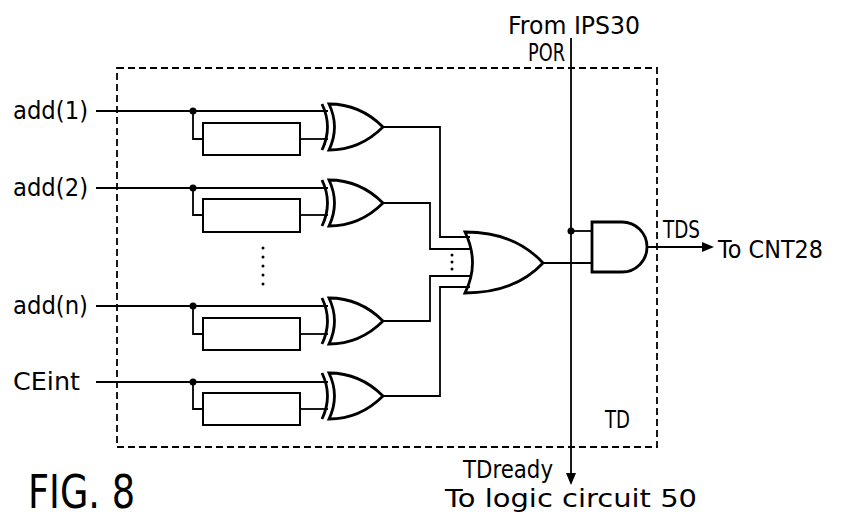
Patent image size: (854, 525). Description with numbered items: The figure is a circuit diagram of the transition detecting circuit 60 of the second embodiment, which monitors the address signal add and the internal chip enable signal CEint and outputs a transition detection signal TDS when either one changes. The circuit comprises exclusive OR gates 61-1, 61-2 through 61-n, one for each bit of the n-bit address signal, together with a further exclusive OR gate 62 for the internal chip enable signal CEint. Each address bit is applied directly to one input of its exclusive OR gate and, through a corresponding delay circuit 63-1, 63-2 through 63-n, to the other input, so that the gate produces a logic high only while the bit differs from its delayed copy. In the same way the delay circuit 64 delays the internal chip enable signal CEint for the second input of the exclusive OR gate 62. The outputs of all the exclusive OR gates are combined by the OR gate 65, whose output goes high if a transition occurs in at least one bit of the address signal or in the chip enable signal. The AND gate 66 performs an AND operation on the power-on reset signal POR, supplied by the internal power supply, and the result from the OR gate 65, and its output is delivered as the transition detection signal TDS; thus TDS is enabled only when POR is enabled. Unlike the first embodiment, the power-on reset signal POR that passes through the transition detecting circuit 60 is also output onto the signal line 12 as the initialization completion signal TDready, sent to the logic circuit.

The transition detecting circuit 60 is at (376, 66).
The exclusive OR gate 61-1 is at (347, 103).
The exclusive OR gate 61-2 is at (347, 180).
The exclusive OR gate 61-n is at (346, 298).
The exclusive OR gate 62 is at (346, 373).
The delay circuit 63-1 is at (203, 144).
The delay circuit 63-2 is at (203, 222).
The delay circuit 63-n is at (203, 340).
The delay circuit 64 is at (203, 416).
The OR gate 65 is at (493, 231).
The AND gate 66 is at (612, 222).
The signal line 12 is at (572, 459).